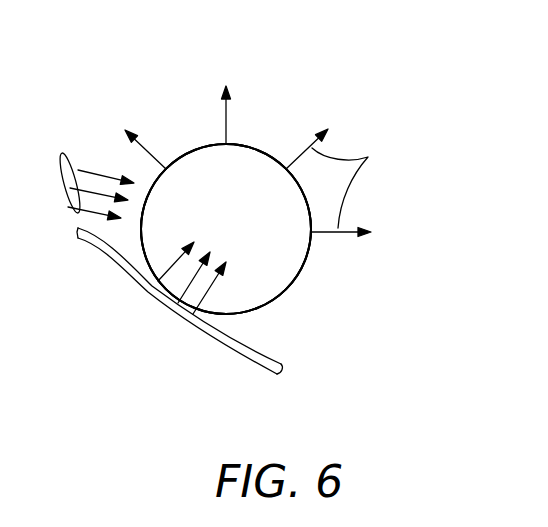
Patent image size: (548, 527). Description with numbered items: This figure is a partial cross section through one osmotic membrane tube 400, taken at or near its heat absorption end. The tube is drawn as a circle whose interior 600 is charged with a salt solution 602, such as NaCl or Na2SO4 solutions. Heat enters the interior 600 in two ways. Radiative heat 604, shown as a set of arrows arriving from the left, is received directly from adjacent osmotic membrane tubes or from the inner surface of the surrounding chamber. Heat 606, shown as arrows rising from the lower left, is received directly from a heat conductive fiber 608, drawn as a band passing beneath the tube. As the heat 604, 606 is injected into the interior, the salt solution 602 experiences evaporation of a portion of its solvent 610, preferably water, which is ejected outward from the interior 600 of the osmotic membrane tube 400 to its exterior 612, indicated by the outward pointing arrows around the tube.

The osmotic membrane tube 400 is at (260, 128).
The interior 600 is at (226, 181).
The salt solution 602 is at (210, 167).
The radiative heat 604 is at (70, 175).
The heat 606 is at (215, 292).
The heat conductive fiber 608 is at (243, 355).
The solvent 610 is at (368, 157).
The exterior 612 is at (358, 316).